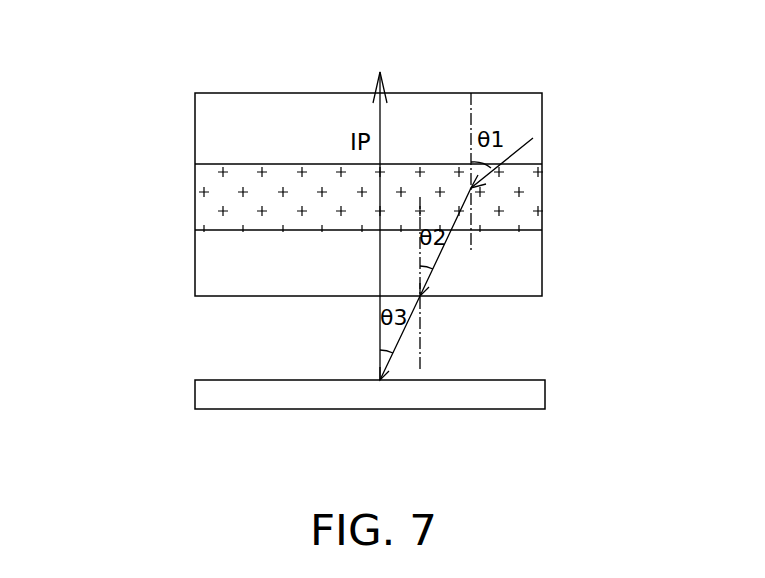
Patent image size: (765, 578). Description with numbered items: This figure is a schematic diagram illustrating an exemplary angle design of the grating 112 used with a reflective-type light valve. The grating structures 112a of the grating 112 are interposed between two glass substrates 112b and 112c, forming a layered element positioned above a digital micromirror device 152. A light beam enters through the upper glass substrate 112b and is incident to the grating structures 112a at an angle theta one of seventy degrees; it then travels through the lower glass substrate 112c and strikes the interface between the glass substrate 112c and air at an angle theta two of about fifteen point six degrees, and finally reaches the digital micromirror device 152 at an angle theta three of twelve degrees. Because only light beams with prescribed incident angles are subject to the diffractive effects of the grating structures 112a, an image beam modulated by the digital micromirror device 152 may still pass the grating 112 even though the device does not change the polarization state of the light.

The grating 112 is at (188, 132).
The glass substrate 112b is at (532, 123).
The grating structures 112a is at (530, 196).
The glass substrate 112c is at (530, 270).
The digital micromirror device 152 is at (195, 392).